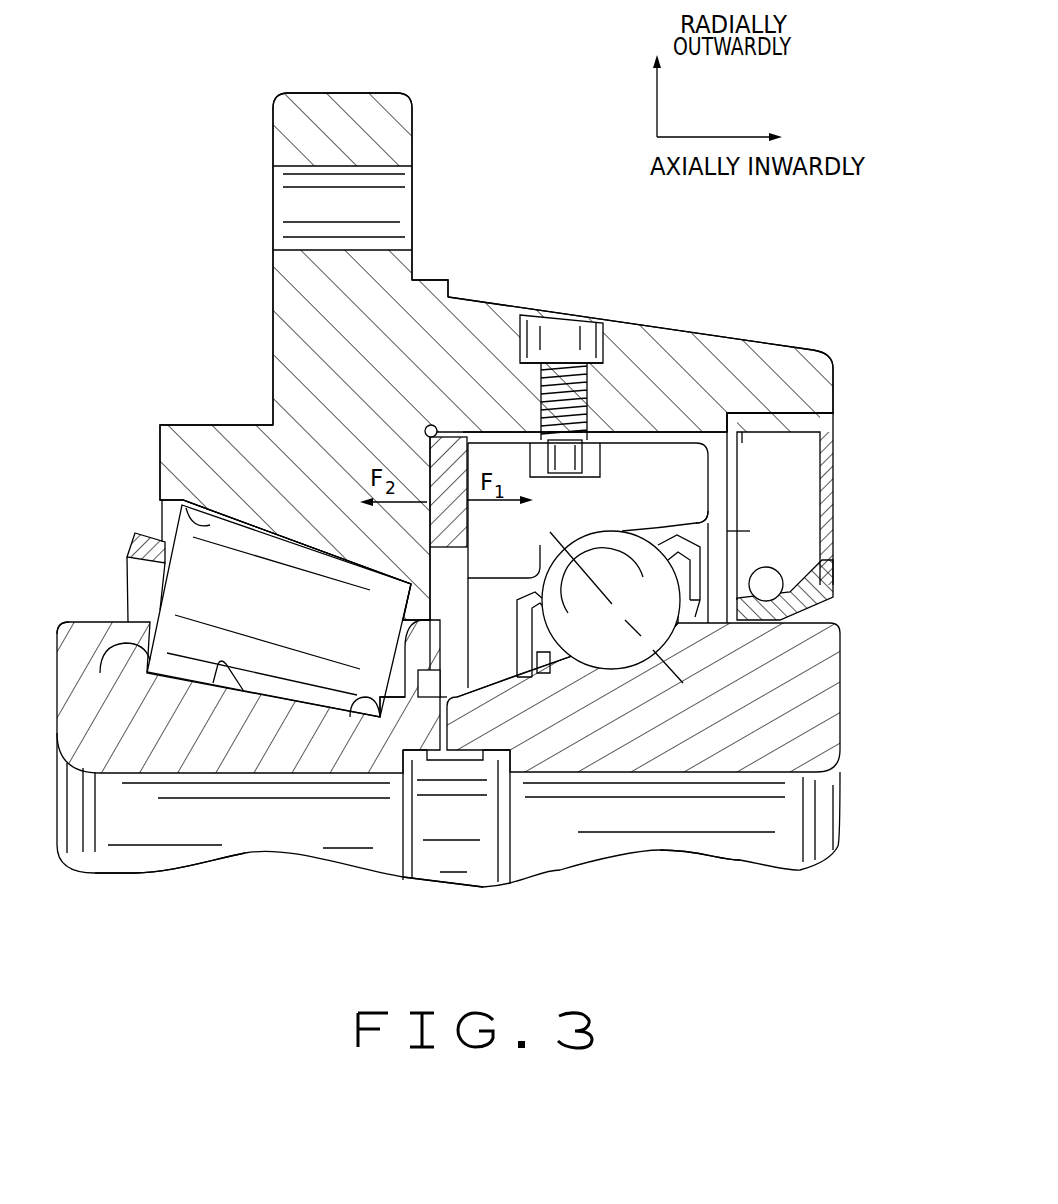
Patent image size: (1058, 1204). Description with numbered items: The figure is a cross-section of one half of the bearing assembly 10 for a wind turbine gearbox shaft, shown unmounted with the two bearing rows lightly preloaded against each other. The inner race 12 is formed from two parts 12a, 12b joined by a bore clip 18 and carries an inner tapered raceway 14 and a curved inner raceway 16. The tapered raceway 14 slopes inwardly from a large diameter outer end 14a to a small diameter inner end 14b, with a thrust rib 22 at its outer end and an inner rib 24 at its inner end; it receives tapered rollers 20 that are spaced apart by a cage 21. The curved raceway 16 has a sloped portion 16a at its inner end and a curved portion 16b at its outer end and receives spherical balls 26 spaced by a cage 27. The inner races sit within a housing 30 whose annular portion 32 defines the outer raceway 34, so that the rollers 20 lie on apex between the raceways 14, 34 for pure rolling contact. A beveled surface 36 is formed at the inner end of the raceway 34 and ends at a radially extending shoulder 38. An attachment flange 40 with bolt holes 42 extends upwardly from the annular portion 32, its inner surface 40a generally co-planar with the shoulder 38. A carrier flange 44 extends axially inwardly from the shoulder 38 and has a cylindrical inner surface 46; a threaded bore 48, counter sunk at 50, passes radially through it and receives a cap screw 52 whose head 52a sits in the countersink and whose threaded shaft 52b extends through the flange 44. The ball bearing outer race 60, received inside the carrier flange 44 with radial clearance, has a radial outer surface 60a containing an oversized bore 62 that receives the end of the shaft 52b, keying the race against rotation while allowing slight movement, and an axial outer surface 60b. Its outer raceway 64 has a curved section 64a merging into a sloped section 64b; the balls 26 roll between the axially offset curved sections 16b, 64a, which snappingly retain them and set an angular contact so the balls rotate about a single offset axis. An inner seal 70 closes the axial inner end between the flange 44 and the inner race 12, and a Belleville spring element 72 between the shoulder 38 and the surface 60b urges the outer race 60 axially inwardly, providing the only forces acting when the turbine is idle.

The bearing assembly 10 is at (819, 322).
The inner race 12 is at (448, 835).
The inner race part 12a is at (303, 854).
The inner race part 12b is at (688, 853).
The inner tapered raceway 14 is at (248, 727).
The large diameter outer end 14a is at (122, 662).
The small diameter inner end 14b is at (390, 678).
The curved inner raceway 16 is at (640, 738).
The sloped portion 16a is at (513, 682).
The curved portion 16b is at (667, 657).
The bore clip 18 is at (475, 882).
The tapered rollers 20 is at (262, 614).
The cage 21 is at (133, 536).
The thrust rib 22 is at (160, 624).
The inner rib 24 is at (455, 762).
The spherical balls 26 is at (660, 612).
The cage 27 is at (540, 697).
The housing 30 is at (452, 298).
The annular portion 32 is at (217, 430).
The outer raceway 34 is at (183, 508).
The beveled surface 36 is at (422, 600).
The shoulder 38 is at (430, 468).
The attachment flange 40 is at (412, 125).
The inner surface 40a is at (413, 262).
The bolt holes 42 is at (383, 167).
The carrier flange 44 is at (822, 356).
The inner surface 46 is at (742, 440).
The threaded bore 48 is at (573, 440).
The counter sunk portion 50 is at (592, 330).
The cap screw 52 is at (534, 357).
The head 52a is at (520, 338).
The threaded shaft 52b is at (541, 384).
The ball bearing outer race 60 is at (682, 530).
The radial outer surface 60a is at (702, 512).
The axial outer surface 60b is at (546, 570).
The bore 62 is at (611, 440).
The ball bearing outer raceway 64 is at (725, 586).
The outer curved section 64a is at (665, 528).
The sloped section 64b is at (733, 530).
The inner seal 70 is at (834, 432).
The spring element 72 is at (426, 425).